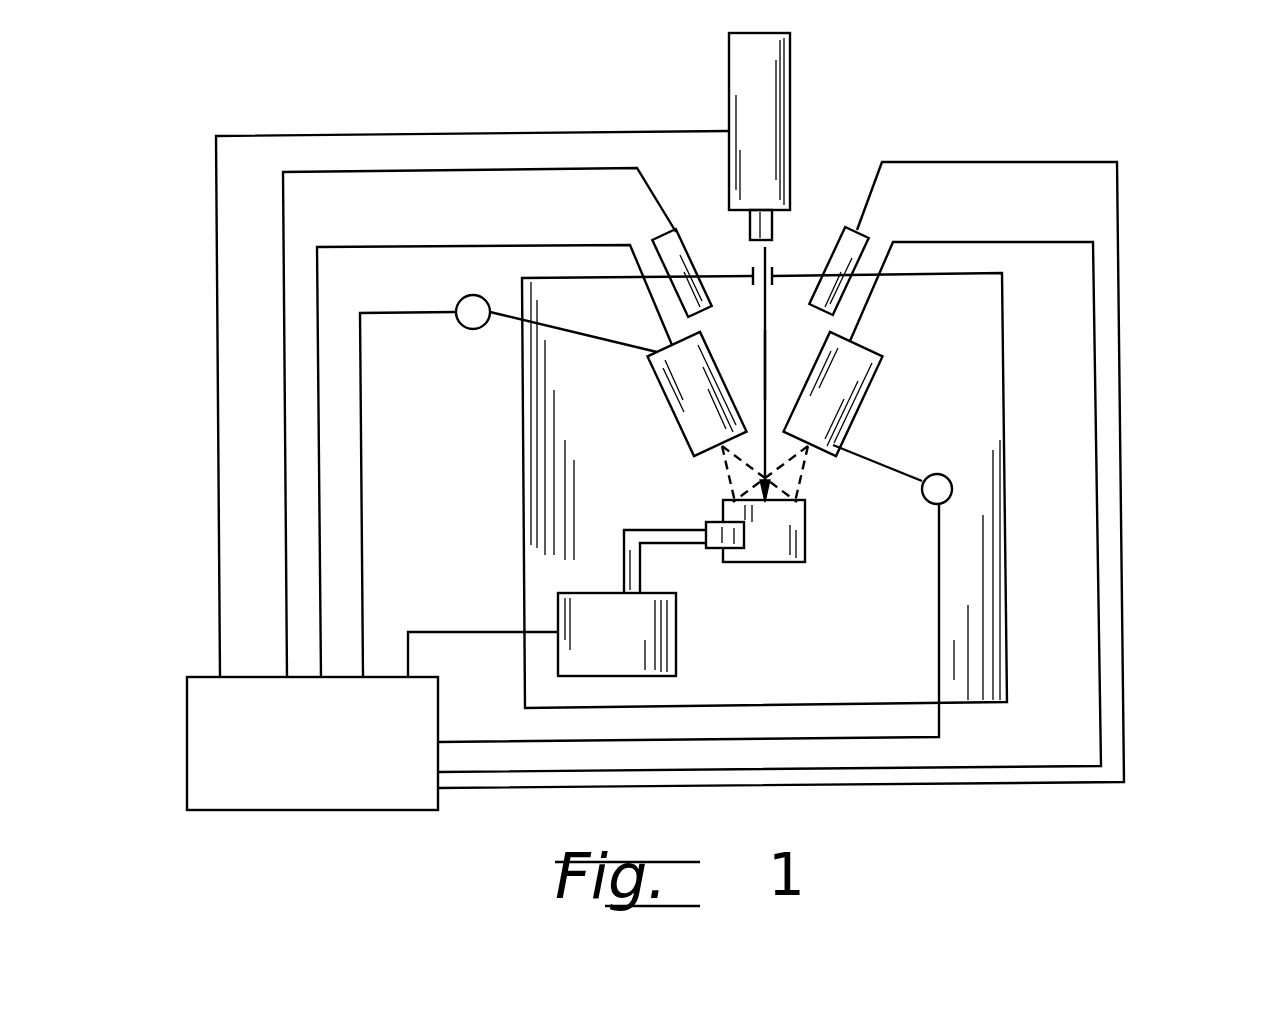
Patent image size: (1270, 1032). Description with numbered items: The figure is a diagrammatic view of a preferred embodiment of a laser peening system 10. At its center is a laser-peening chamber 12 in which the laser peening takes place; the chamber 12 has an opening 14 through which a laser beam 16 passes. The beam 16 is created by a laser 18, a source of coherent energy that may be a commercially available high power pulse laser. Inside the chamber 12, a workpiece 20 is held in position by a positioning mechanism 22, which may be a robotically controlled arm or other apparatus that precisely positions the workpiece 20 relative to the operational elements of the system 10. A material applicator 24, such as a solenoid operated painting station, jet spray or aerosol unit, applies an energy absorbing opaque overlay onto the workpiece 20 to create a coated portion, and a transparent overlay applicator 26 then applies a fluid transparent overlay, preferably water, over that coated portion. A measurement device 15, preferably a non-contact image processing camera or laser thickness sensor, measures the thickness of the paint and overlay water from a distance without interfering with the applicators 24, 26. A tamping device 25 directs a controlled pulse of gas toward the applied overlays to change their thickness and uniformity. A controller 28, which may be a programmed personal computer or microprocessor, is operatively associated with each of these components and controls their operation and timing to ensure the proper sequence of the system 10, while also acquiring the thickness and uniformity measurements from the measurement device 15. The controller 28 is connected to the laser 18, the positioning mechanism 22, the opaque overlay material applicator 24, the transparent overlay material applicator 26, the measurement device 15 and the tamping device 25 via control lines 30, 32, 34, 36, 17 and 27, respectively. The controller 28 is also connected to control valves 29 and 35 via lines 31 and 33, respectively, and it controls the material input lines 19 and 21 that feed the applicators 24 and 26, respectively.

The laser peening system 10 is at (1197, 211).
The laser-peening chamber 12 is at (1008, 455).
The opening 14 is at (769, 268).
The measurement device 15 is at (862, 252).
The laser beam 16 is at (762, 354).
The control line 17 is at (1122, 368).
The laser 18 is at (783, 90).
The material input line 19 is at (882, 463).
The workpiece 20 is at (806, 548).
The material input line 21 is at (594, 336).
The positioning mechanism 22 is at (678, 625).
The material applicator 24 is at (664, 394).
The tamping device 25 is at (692, 258).
The transparent overlay applicator 26 is at (862, 390).
The control line 27 is at (283, 440).
The controller 28 is at (187, 740).
The control valve 29 is at (921, 494).
The control line 30 is at (630, 131).
The line 31 is at (940, 730).
The control line 32 is at (478, 632).
The line 33 is at (362, 486).
The control line 34 is at (497, 247).
The control valve 35 is at (473, 330).
The control line 36 is at (1008, 242).